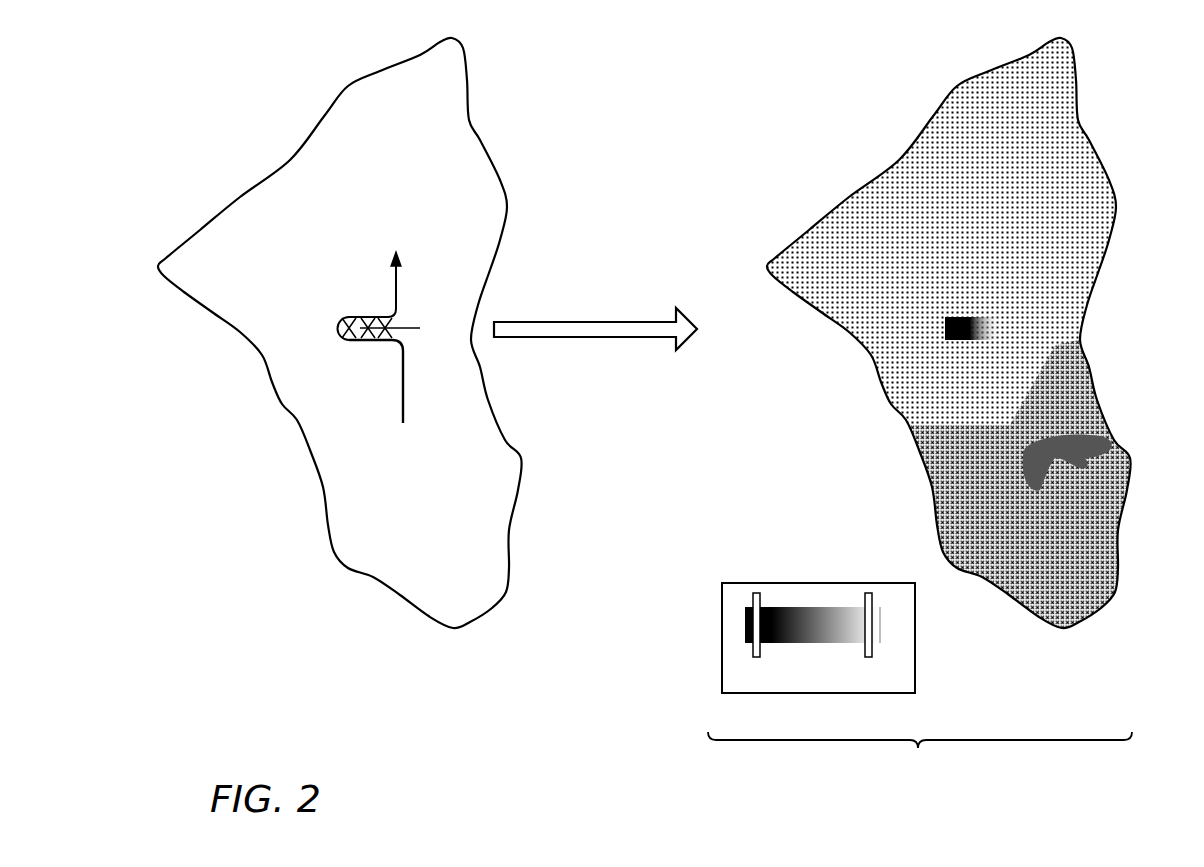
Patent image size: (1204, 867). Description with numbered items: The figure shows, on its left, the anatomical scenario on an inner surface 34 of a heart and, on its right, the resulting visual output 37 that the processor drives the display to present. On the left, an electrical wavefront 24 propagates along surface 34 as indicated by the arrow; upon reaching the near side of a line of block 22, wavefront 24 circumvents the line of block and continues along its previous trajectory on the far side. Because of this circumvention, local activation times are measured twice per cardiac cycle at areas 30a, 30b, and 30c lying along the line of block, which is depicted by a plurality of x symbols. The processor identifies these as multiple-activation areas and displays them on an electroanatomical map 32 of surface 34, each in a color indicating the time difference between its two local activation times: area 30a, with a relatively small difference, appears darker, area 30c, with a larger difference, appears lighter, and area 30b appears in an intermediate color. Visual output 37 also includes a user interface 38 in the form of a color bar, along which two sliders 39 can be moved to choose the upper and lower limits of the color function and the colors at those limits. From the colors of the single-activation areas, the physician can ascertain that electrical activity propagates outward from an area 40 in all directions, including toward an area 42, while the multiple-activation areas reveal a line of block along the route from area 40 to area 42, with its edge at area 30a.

The line of block 22 is at (420, 327).
The electrical wavefront 24 is at (405, 412).
The multiple-activation area 30a is at (352, 316).
The multiple-activation area 30b is at (366, 341).
The multiple-activation area 30c is at (390, 316).
The electroanatomical map 32 is at (852, 200).
The inner surface 34 is at (240, 200).
The visual output 37 is at (920, 756).
The user interface 38 is at (805, 583).
The sliders 39 is at (760, 592).
The area 40 is at (1105, 444).
The area 42 is at (1030, 85).